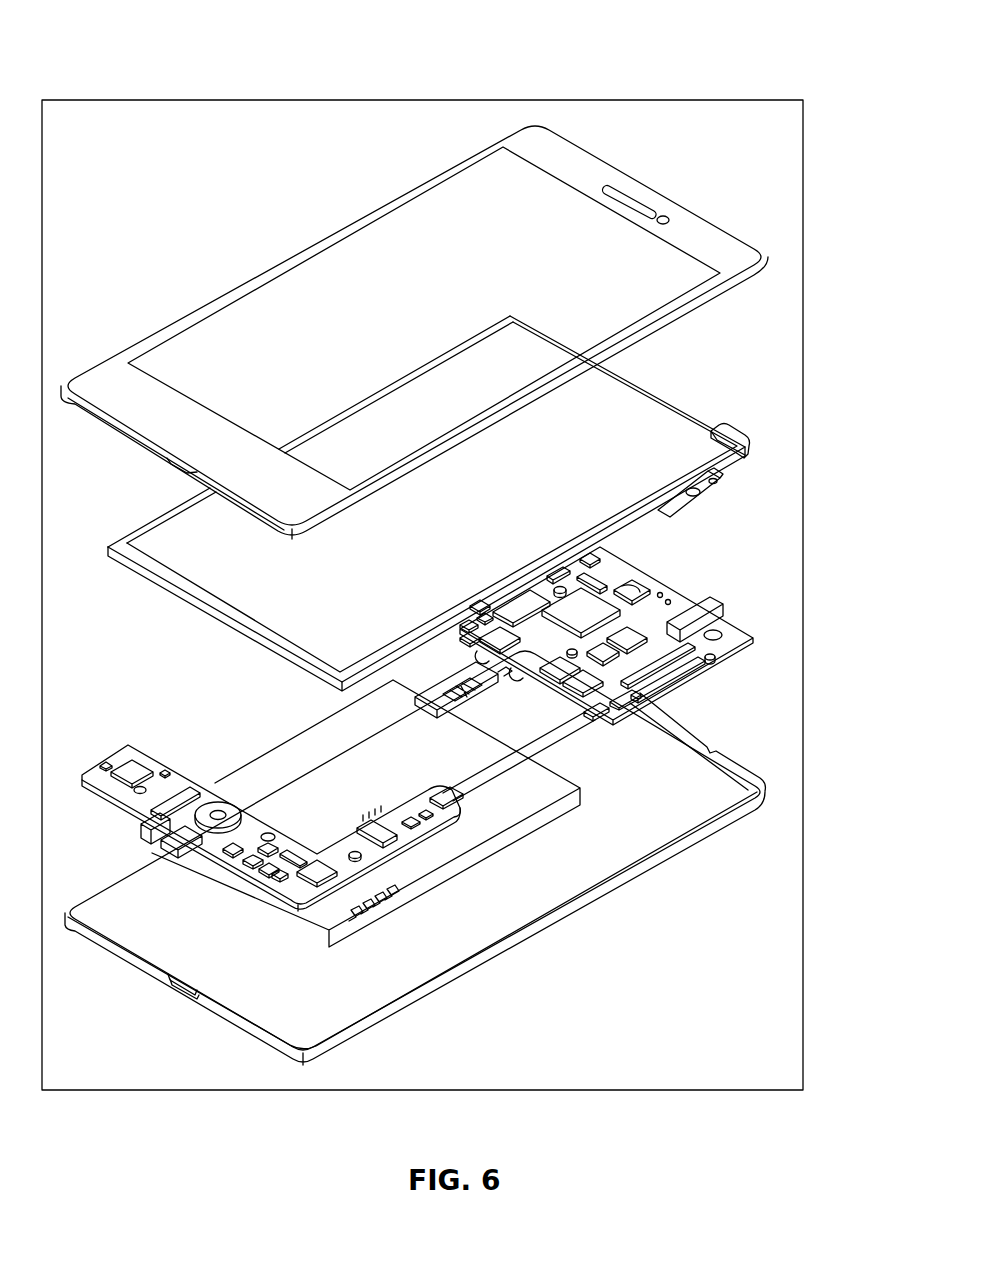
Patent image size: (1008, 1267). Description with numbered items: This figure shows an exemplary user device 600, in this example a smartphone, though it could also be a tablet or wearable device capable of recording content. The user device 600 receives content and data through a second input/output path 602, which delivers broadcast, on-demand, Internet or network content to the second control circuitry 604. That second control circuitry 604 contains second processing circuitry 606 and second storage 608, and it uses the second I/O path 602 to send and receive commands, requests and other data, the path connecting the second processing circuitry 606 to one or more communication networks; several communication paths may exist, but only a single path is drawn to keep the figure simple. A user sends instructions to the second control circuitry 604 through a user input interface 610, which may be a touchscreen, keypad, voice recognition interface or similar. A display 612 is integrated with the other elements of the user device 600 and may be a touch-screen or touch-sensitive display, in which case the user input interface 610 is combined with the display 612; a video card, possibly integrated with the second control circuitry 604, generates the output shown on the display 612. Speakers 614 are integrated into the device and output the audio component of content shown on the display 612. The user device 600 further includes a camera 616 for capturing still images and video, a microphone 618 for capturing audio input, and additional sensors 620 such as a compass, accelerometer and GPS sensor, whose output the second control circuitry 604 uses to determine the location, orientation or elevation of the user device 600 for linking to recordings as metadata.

The user device 600 is at (124, 43).
The second input/output (I/O) path 602 is at (188, 830).
The second control circuitry 604 is at (722, 665).
The second processing circuitry 606 is at (664, 647).
The second storage 608 is at (592, 613).
The user input interface 610 is at (620, 437).
The display 612 is at (662, 468).
The speakers 614 is at (633, 190).
The camera 616 is at (752, 441).
The microphone 618 is at (219, 798).
The sensors 620 is at (748, 754).